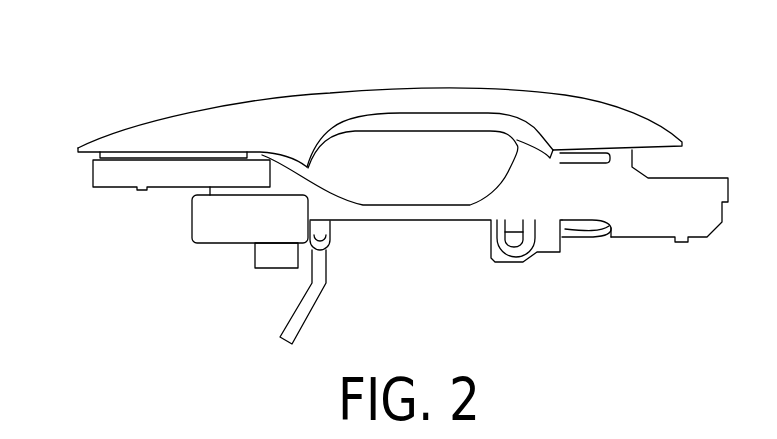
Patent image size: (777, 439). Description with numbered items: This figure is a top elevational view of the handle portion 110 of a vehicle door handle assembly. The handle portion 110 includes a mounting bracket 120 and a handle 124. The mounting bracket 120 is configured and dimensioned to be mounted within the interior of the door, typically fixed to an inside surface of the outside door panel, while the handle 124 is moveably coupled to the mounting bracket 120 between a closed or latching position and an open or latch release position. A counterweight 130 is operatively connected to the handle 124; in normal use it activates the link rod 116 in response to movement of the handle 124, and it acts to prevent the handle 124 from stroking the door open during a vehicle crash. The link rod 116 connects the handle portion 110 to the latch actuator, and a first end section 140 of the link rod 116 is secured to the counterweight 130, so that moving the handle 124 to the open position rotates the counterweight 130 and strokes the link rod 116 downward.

The handle portion 110 is at (144, 74).
The handle 124 is at (455, 97).
The mounting bracket 120 is at (650, 220).
The counterweight 130 is at (210, 222).
The first end section 140 is at (320, 266).
The link rod 116 is at (302, 312).